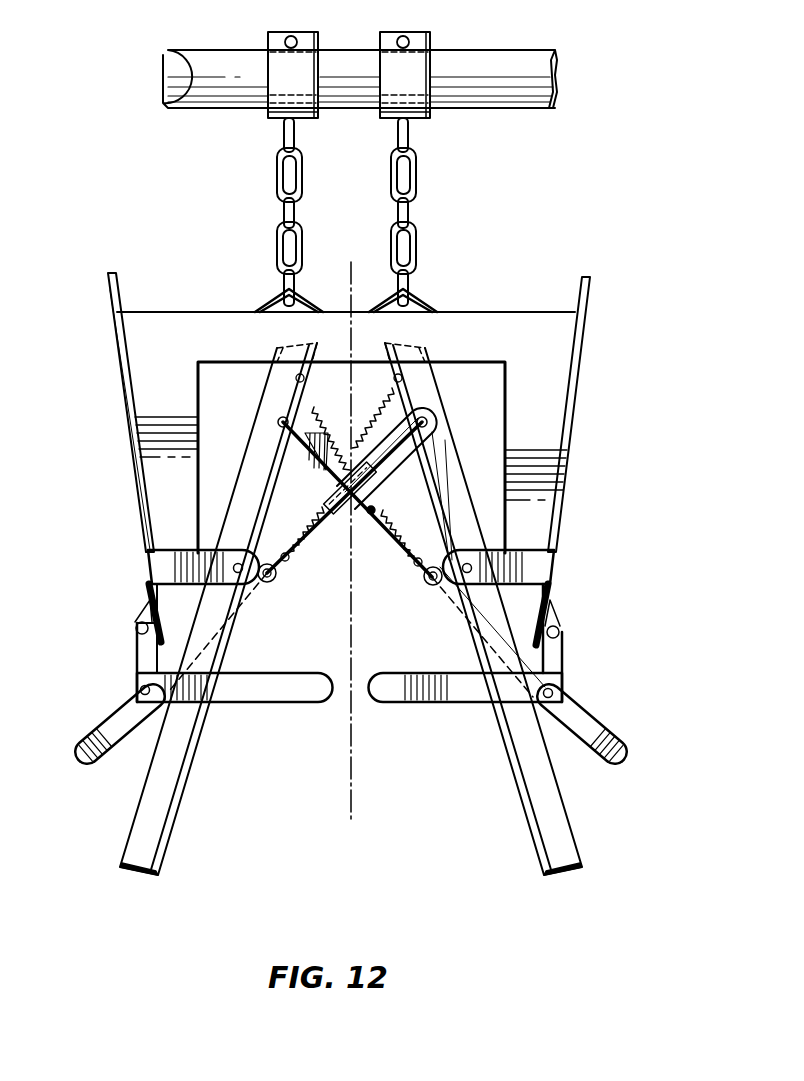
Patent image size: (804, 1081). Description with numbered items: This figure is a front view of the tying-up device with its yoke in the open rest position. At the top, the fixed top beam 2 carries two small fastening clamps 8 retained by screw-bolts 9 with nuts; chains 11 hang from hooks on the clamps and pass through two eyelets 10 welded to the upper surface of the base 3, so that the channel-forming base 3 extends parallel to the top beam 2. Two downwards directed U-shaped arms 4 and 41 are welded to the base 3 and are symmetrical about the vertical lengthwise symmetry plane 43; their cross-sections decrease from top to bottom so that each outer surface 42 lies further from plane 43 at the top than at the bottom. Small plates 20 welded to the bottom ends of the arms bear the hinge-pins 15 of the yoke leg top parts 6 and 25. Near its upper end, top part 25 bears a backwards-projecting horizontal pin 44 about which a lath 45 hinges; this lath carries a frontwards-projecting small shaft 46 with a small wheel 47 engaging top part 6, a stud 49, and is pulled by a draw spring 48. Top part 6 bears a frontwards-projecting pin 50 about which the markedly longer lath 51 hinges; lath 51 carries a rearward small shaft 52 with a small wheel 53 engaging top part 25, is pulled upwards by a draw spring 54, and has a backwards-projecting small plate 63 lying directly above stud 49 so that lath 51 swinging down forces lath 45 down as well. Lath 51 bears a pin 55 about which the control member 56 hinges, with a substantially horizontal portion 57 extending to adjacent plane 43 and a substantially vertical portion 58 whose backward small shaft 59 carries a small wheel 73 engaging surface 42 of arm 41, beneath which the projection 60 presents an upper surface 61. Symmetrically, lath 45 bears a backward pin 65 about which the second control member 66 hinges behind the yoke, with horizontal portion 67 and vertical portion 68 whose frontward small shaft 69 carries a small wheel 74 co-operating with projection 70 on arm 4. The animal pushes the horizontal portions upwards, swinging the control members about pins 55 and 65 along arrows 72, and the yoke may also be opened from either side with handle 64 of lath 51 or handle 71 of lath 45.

The top beam 2 is at (186, 60).
The small fastening clamps 8 is at (268, 45).
The screw-bolts 9 is at (390, 45).
The chains 11 is at (412, 172).
The eyelets 10 is at (445, 286).
The base 3 is at (497, 330).
The arm 41 is at (145, 337).
The outer surface 42 is at (120, 364).
The arm 4 is at (545, 394).
The vertical lengthwise symmetry plane 43 is at (353, 812).
The top part of yoke leg 25 is at (168, 810).
The top part of yoke leg 6 is at (566, 822).
The horizontal pin 44 is at (278, 422).
The pin 50 is at (430, 426).
The draw spring 54 is at (405, 386).
The lath 51 is at (312, 518).
The small plate 63 is at (333, 530).
The stud 49 is at (374, 510).
The draw spring 48 is at (400, 512).
The lath 45 is at (446, 505).
The hinge-pins 15 is at (478, 548).
The small shaft 52 is at (279, 578).
The small wheel 53 is at (268, 590).
The small shaft 46 is at (423, 580).
The small wheel 47 is at (440, 592).
The projection 60 is at (147, 582).
The upper surface 61 is at (143, 603).
The small wheel 73 is at (134, 628).
The small shaft 59 is at (140, 646).
The substantially vertical portion 58 is at (145, 665).
The substantially horizontal portion 57 is at (303, 690).
The pin 55 is at (140, 690).
The handle 64 is at (80, 748).
The control member 56 is at (272, 722).
The arrows 72 is at (256, 630).
The small plates 20 is at (525, 566).
The projection 70 is at (578, 594).
The small shaft 69 is at (562, 640).
The small wheel 74 is at (562, 626).
The substantially vertical portion 68 is at (560, 667).
The substantially horizontal portion 67 is at (389, 688).
The pin 65 is at (565, 692).
The handle 71 is at (608, 755).
The second control member 66 is at (443, 722).